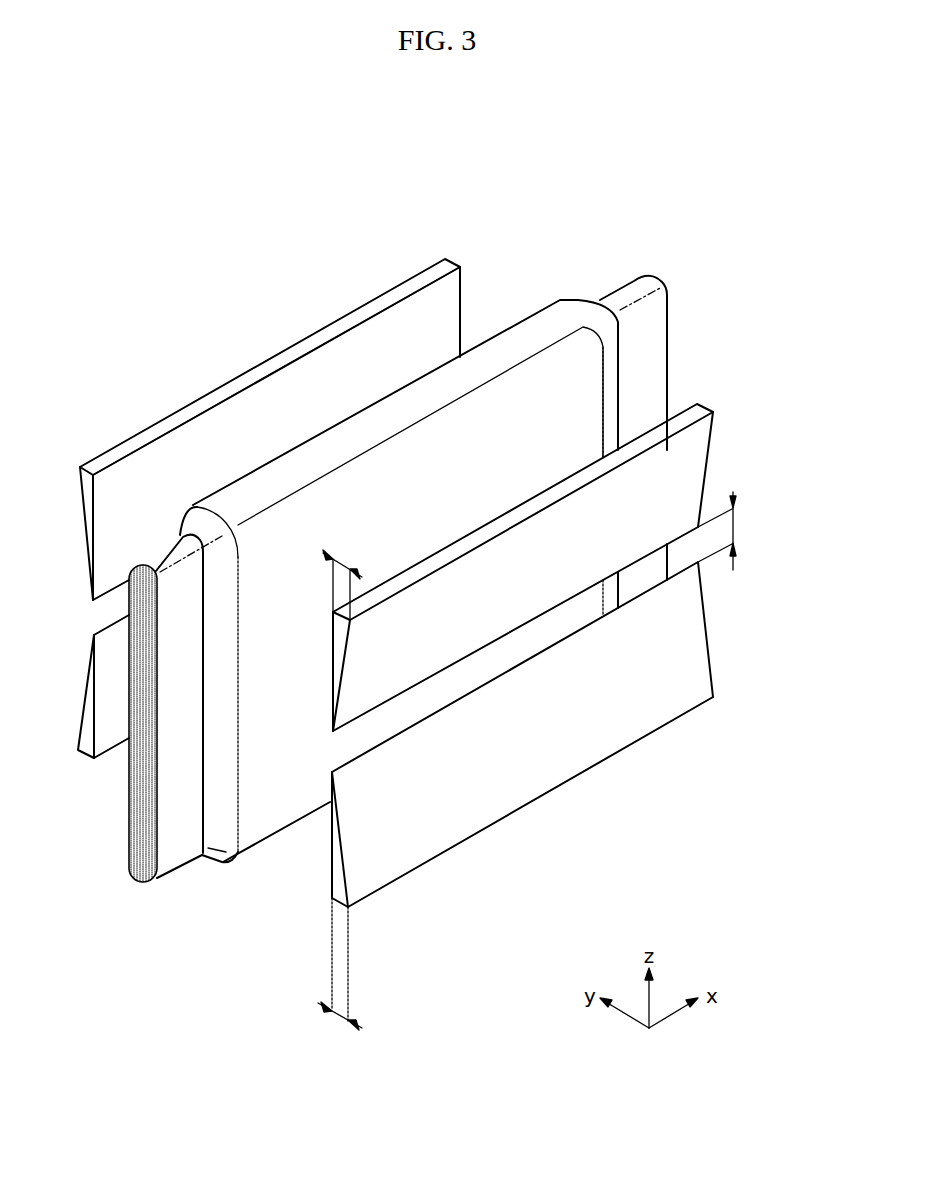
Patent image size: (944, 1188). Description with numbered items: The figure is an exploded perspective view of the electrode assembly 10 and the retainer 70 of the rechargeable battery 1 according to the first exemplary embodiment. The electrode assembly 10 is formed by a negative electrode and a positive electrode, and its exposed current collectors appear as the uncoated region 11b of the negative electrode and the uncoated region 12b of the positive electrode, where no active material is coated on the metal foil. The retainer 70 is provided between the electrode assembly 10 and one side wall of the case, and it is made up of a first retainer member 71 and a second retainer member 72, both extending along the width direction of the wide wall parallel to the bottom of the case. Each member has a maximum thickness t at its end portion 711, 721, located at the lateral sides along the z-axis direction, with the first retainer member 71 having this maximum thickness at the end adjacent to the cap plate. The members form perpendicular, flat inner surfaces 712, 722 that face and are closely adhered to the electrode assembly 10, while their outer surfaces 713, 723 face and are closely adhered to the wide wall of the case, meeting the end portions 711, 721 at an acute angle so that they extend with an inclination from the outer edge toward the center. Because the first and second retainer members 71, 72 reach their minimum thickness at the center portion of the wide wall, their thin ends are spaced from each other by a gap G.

The rechargeable battery 1 is at (411, 174).
The electrode assembly 10 is at (548, 298).
The uncoated region of negative electrode 11b is at (173, 848).
The uncoated region of positive electrode 12b is at (648, 346).
The retainer 70 is at (758, 738).
The first retainer member 71 is at (718, 450).
The second retainer member 72 is at (713, 620).
The end portion of first retainer member 711 is at (440, 560).
The inner surface of first retainer member 712 is at (330, 632).
The outer surface of first retainer member 713 is at (417, 638).
The end portion of second retainer member 721 is at (340, 907).
The inner surface of second retainer member 722 is at (330, 865).
The outer surface of second retainer member 723 is at (423, 833).
The gap G is at (726, 531).
The maximum thickness t is at (340, 789).